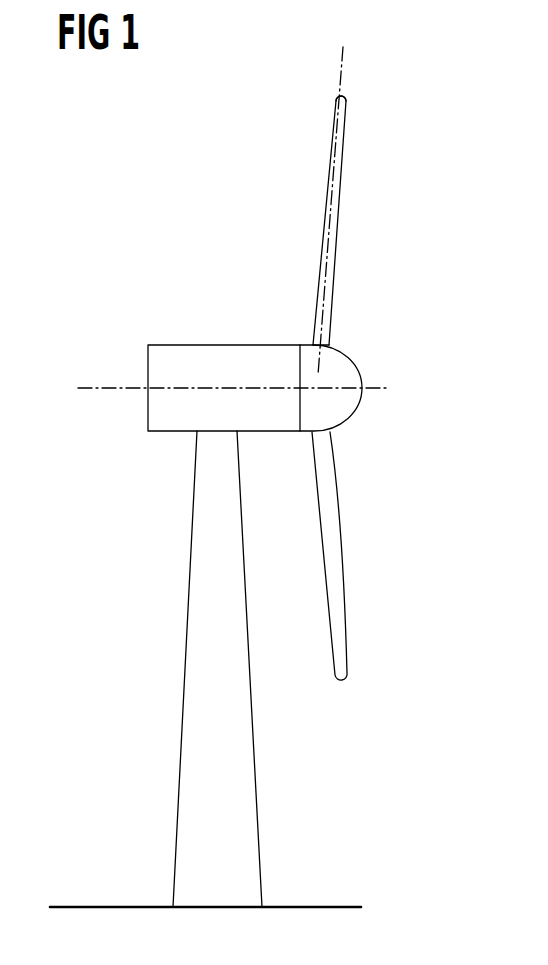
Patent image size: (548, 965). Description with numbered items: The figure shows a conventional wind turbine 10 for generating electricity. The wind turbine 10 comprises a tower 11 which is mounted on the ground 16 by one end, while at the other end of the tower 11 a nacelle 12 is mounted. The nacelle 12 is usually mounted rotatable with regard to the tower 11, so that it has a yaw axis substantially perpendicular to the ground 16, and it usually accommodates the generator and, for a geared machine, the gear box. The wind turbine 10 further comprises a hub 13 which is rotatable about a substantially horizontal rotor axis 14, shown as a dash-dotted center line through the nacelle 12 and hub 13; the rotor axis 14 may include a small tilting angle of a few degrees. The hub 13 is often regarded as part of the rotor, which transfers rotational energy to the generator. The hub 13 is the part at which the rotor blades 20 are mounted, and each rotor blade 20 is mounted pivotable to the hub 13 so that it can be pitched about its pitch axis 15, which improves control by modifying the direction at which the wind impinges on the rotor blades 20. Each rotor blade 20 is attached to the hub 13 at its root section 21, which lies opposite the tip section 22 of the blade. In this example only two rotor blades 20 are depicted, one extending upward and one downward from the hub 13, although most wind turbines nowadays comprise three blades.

The wind turbine 10 is at (137, 572).
The tower 11 is at (237, 750).
The nacelle 12 is at (196, 344).
The hub 13 is at (355, 363).
The rotor axis 14 is at (92, 385).
The pitch axis 15 is at (342, 63).
The ground 16 is at (313, 906).
The rotor blade 20 is at (350, 223).
The root section 21 is at (323, 338).
The tip section 22 is at (346, 112).